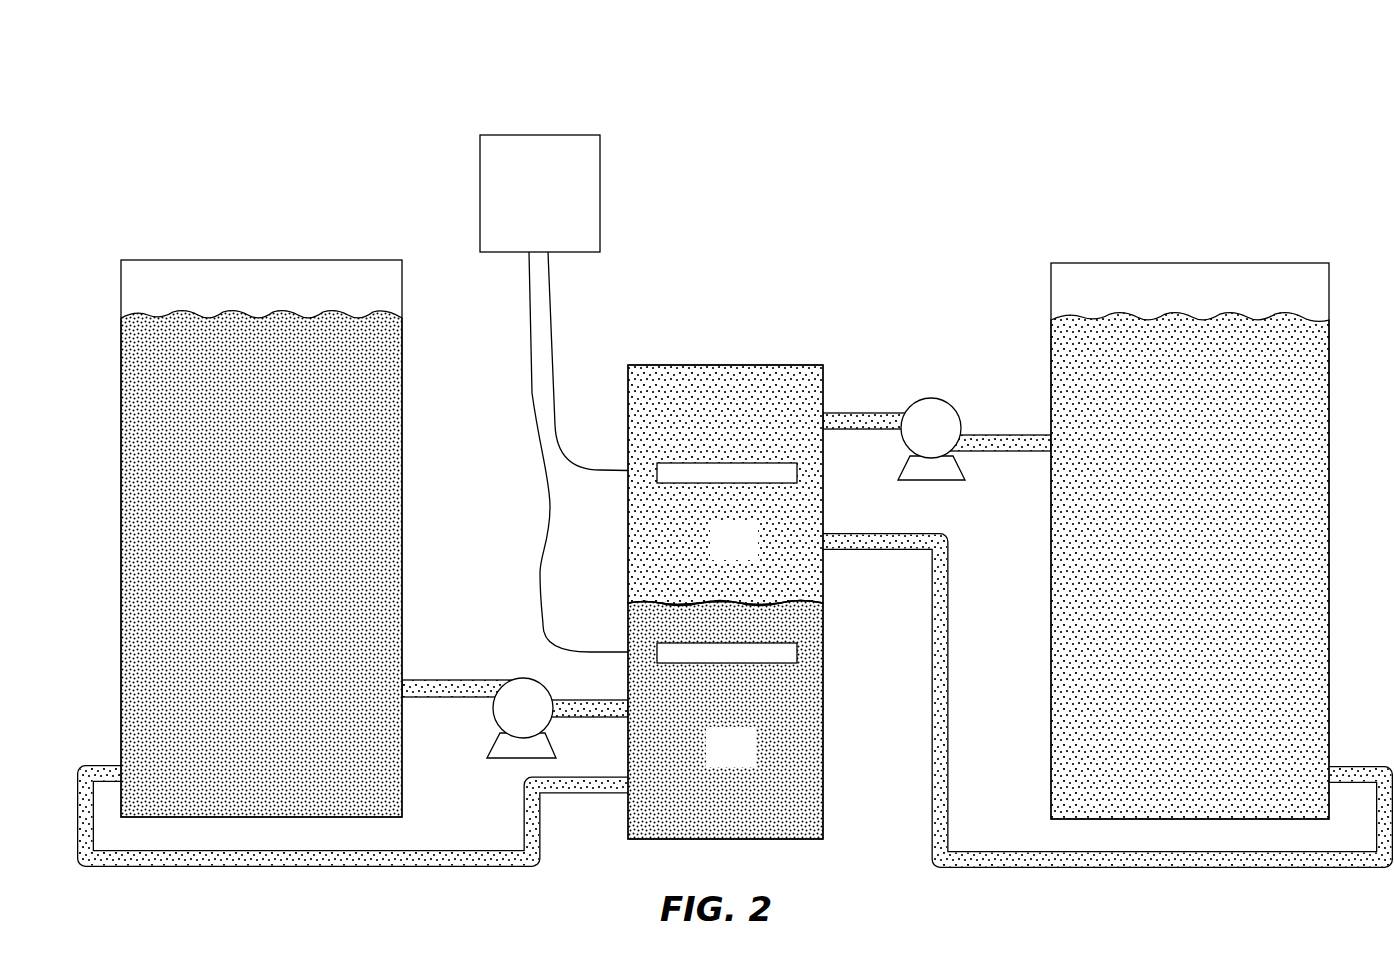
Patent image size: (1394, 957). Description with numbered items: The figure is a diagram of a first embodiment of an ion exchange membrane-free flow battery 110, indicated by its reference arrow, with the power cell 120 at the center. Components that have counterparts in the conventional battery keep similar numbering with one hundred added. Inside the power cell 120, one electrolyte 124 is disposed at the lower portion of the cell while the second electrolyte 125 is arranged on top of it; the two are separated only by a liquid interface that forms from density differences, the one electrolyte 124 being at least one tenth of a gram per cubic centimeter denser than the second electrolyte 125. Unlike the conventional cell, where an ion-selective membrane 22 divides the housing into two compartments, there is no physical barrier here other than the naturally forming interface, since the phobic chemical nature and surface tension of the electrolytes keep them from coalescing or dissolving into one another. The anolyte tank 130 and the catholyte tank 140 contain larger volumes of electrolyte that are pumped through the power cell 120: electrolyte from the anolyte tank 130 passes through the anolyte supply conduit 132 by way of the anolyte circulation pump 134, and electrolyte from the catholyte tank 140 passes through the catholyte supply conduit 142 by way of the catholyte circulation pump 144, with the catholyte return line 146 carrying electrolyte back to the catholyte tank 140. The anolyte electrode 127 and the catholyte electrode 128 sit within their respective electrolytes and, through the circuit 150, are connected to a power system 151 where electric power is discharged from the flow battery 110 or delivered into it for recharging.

The flow battery 110 is at (466, 38).
The power cell 120 is at (731, 546).
The ion-selective membrane 22 is at (641, 603).
The one electrolyte 124 is at (750, 761).
The second electrolyte 125 is at (753, 556).
The anolyte electrode 127 is at (794, 656).
The catholyte electrode 128 is at (796, 473).
The anolyte tank 130 is at (158, 260).
The anolyte supply conduit 132 is at (477, 682).
The anolyte circulation pump 134 is at (506, 717).
The catholyte tank 140 is at (1313, 262).
The catholyte supply conduit 142 is at (856, 420).
The catholyte circulation pump 144 is at (936, 410).
The catholyte return line 146 is at (968, 856).
The circuit 150 is at (558, 330).
The power system 151 is at (565, 208).